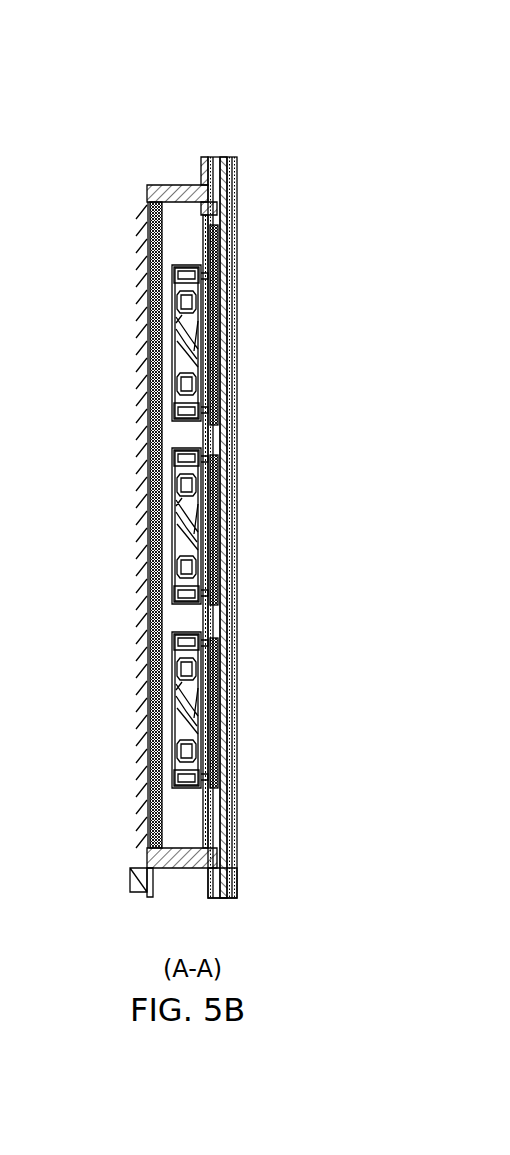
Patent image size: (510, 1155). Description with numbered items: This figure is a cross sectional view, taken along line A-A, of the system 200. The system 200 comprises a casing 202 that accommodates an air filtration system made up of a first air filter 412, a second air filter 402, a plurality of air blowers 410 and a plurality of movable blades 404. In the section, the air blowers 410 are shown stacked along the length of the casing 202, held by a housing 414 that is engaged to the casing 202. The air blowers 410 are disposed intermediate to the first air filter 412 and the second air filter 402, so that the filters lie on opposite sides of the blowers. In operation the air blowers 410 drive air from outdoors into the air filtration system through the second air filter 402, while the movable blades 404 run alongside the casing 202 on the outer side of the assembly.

The system 200 is at (305, 100).
The casing 202 is at (237, 170).
The second air filter 402 is at (215, 248).
The movable blades 404 is at (140, 275).
The air blowers 410 is at (180, 425).
The first air filter 412 is at (166, 226).
The housing 414 is at (204, 218).